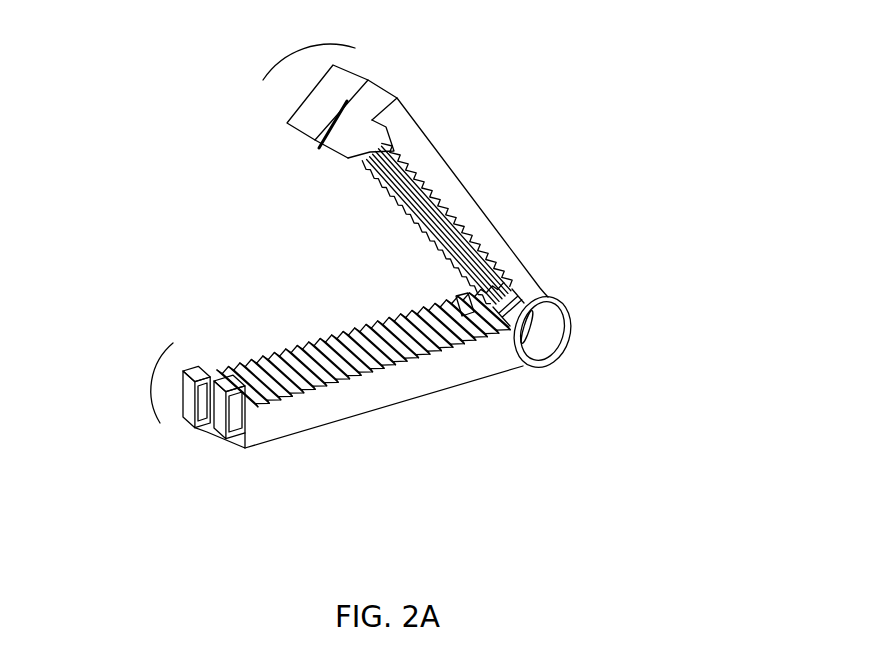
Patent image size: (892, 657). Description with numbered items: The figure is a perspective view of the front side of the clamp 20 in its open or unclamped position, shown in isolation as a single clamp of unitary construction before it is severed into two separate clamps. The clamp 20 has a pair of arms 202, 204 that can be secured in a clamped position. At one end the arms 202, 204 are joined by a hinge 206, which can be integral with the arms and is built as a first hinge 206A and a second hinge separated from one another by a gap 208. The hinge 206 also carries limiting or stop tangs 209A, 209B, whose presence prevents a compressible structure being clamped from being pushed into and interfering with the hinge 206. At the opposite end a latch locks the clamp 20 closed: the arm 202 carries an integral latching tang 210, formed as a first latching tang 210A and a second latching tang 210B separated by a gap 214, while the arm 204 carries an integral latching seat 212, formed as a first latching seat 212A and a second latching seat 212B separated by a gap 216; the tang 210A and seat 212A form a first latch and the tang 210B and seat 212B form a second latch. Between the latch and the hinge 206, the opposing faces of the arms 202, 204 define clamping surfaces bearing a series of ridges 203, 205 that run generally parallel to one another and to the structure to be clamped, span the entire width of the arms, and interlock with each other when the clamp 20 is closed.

The clamp 20 is at (592, 133).
The arm 202 is at (450, 190).
The ridges 203 is at (473, 253).
The arm 204 is at (342, 407).
The ridges 205 is at (430, 365).
The hinge 206 is at (570, 322).
The first hinge 206A is at (538, 347).
The gap 208 is at (458, 308).
The stop tang 209A is at (530, 328).
The stop tang 209B is at (475, 298).
The latching tang 210 is at (300, 50).
The first latching tang 210A is at (347, 133).
The second latching tang 210B is at (325, 97).
The latching seat 212 is at (152, 382).
The first latching seat 212A is at (233, 410).
The second latching seat 212B is at (203, 392).
The gap 214 is at (297, 130).
The gap 216 is at (208, 430).